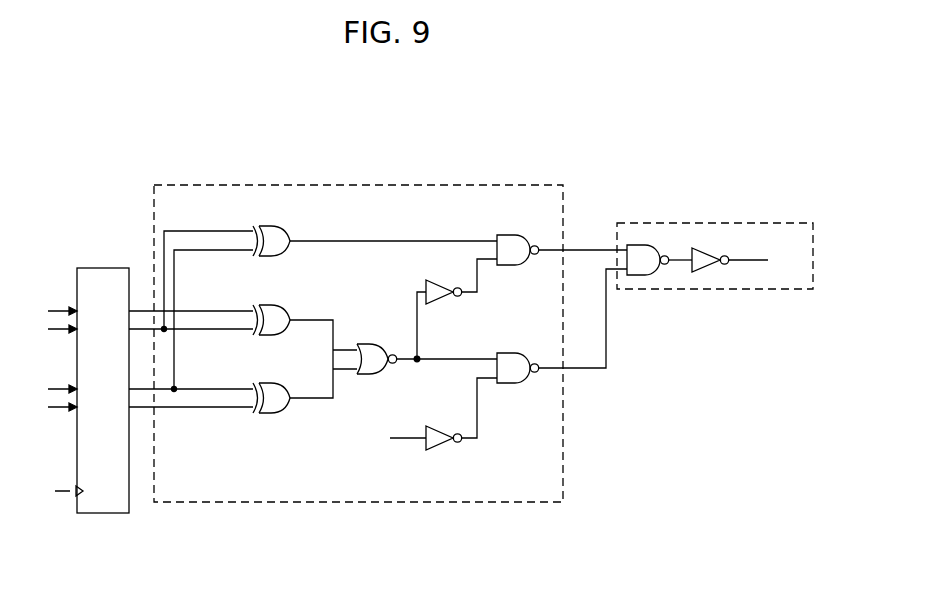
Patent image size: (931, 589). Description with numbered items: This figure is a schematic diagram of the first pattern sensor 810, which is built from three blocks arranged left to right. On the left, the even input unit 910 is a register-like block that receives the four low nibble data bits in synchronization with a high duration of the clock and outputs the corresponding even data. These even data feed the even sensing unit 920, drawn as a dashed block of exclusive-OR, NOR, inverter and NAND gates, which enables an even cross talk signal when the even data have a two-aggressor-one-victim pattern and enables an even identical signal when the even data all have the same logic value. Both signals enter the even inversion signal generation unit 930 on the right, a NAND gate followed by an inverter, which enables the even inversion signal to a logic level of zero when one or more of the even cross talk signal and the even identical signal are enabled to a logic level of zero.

The first pattern sensor 810 is at (688, 148).
The even input unit 910 is at (101, 513).
The even sensing unit 920 is at (517, 183).
The even inversion signal generation unit 930 is at (772, 223).